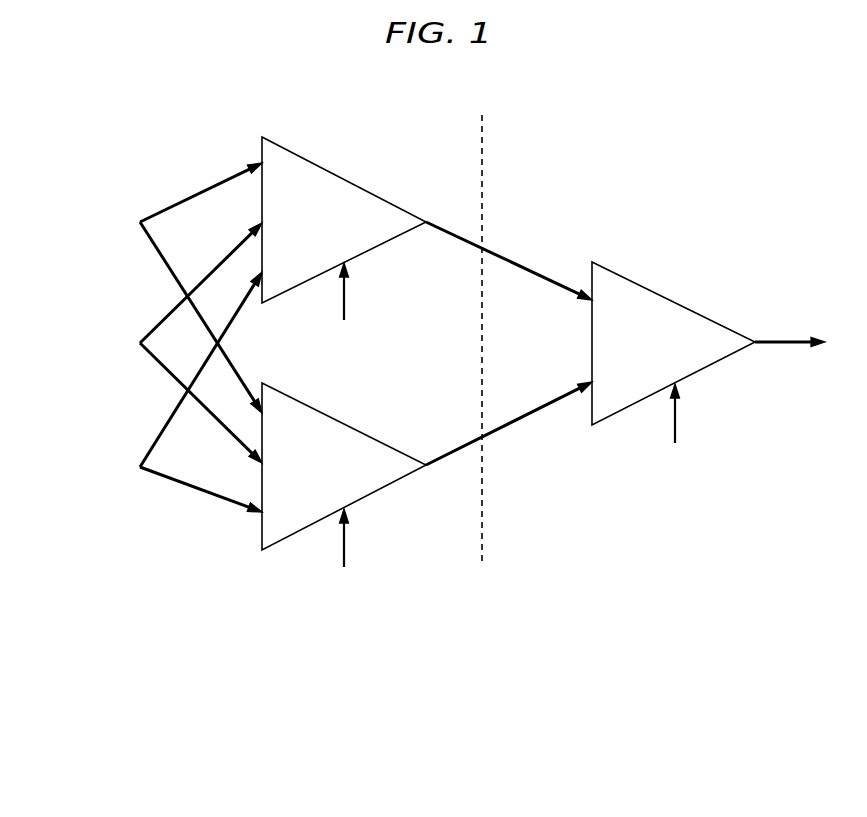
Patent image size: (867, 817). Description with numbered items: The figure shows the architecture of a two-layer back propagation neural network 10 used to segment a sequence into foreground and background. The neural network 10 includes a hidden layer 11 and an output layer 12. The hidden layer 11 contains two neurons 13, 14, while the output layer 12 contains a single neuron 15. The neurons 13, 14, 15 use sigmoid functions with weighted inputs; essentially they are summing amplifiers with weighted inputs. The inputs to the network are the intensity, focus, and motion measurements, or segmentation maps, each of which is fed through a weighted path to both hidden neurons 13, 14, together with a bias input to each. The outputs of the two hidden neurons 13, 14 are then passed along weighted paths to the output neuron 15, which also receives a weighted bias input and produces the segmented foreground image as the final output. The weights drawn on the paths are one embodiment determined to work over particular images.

The neural network 10 is at (140, 129).
The hidden layer 11 is at (296, 332).
The output layer 12 is at (625, 273).
The neuron 13 is at (342, 178).
The neuron 14 is at (343, 425).
The neuron 15 is at (673, 300).